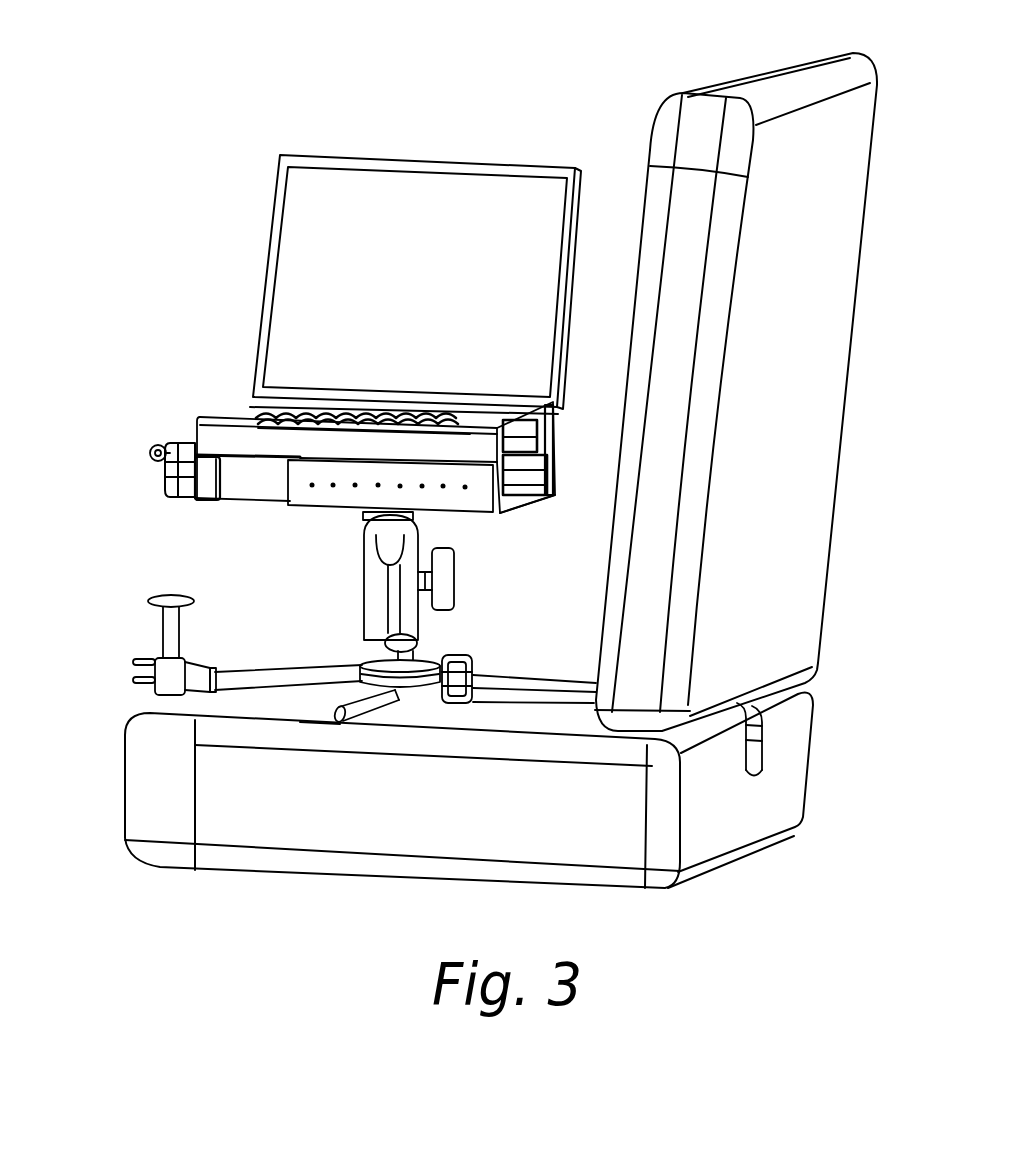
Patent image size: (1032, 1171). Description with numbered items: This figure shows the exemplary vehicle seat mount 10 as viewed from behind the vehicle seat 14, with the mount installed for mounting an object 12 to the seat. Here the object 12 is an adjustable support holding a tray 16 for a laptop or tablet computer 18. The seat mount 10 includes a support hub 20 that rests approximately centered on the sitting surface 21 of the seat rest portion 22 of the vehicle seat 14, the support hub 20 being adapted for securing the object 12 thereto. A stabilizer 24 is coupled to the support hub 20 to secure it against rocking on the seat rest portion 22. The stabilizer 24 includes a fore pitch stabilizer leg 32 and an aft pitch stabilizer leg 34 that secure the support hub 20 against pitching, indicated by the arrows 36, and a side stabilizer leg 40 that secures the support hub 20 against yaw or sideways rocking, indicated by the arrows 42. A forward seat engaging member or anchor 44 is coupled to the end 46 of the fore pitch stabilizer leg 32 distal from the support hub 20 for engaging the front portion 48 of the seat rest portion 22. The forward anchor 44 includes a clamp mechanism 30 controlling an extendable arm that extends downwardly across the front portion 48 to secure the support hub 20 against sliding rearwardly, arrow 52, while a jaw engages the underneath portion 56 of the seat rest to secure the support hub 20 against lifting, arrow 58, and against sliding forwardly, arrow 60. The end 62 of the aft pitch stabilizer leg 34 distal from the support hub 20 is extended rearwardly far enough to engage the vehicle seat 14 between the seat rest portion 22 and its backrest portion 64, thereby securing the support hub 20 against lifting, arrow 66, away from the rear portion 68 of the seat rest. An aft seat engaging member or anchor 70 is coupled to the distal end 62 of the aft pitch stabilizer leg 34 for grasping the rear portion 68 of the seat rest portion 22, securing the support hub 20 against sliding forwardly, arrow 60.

The vehicle seat mount 10 is at (146, 515).
The object 12 is at (363, 537).
The vehicle seat 14 is at (650, 172).
The tray 16 is at (252, 478).
The laptop or tablet computer 18 is at (257, 403).
The support hub 20 is at (420, 693).
The sitting surface 21 is at (322, 707).
The seat rest portion 22 is at (573, 853).
The stabilizer 24 is at (378, 707).
The clamp mechanism 30 is at (163, 670).
The fore pitch stabilizer leg 32 is at (253, 680).
The aft pitch stabilizer leg 34 is at (508, 690).
The arrows (pitching) 36 is at (122, 697).
The side stabilizer leg 40 is at (365, 712).
The arrows (yaw or sideways rocking) 42 is at (260, 543).
The forward seat engaging member or anchor 44 is at (182, 635).
The end of fore pitch stabilizer leg 46 is at (223, 670).
The front portion of seat rest portion 48 is at (125, 788).
The arrow (sliding rearwardly) 52 is at (176, 727).
The underneath portion of seat rest 56 is at (160, 866).
The arrow (lifting) 58 is at (107, 792).
The arrow (sliding forwardly) 60 is at (640, 607).
The end of aft pitch stabilizer leg 62 is at (757, 707).
The backrest portion 64 is at (613, 558).
The arrow (lifting away from rear portion) 66 is at (757, 785).
The rear portion of seat rest 68 is at (800, 757).
The aft seat engaging member or anchor 70 is at (753, 757).